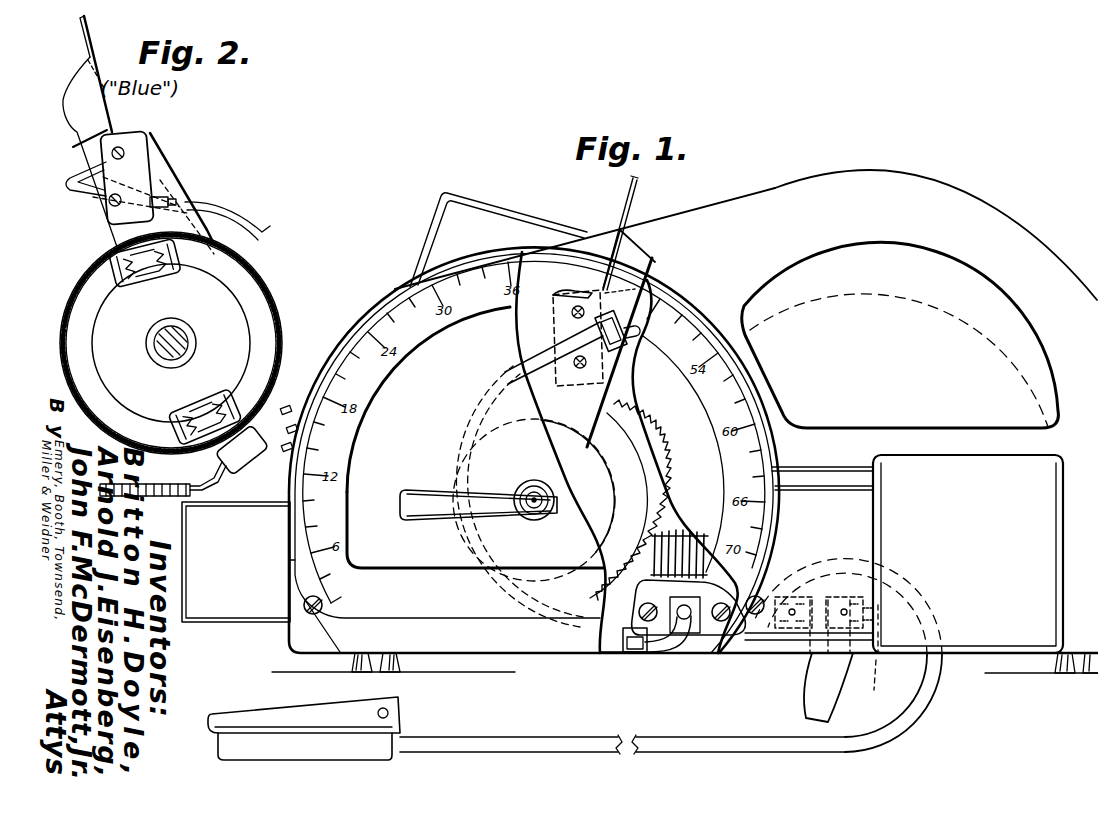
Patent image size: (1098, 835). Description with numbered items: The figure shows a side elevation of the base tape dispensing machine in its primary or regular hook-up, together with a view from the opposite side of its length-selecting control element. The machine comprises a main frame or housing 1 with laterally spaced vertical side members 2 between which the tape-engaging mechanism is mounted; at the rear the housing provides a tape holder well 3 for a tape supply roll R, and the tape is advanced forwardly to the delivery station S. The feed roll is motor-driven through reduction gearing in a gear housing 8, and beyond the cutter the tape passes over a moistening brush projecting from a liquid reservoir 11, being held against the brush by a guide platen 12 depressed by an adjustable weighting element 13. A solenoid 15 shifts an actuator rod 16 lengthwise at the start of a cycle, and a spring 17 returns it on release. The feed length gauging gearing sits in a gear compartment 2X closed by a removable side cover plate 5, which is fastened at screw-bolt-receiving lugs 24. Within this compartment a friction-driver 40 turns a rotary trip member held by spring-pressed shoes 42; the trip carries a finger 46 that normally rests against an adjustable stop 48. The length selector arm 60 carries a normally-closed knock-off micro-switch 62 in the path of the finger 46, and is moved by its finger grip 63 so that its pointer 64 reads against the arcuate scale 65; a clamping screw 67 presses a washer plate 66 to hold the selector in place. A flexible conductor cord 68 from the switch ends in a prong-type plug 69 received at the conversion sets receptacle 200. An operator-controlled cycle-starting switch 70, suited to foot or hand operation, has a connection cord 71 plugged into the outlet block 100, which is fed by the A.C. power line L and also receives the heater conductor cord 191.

In FIG. 1, the main frame or housing 1 is at (1046, 226).
In FIG. 1, the vertical side members 2 is at (745, 199).
In FIG. 1, the gear compartment 2X is at (695, 320).
In FIG. 1, the tape holder well 3 is at (1012, 298).
In FIG. 1, the tape supply roll R is at (920, 306).
In FIG. 1, the side cover plate 5 is at (373, 333).
In FIG. 1, the gear housing 8 is at (624, 331).
In FIG. 1, the liquid reservoir 11 is at (250, 597).
In FIG. 1, the guide platen 12 is at (291, 444).
In FIG. 1, the adjustable weighting element 13 is at (357, 428).
In FIG. 1, the solenoid 15 is at (968, 464).
In FIG. 1, the actuator rod 16 is at (661, 567).
In FIG. 1, the spring 17 is at (682, 540).
In FIG. 1, the screw-bolt-receiving lugs 24 is at (314, 615).
In FIG. 2, the friction-driver flange 40 is at (80, 276).
In FIG. 2, the spring-pressed shoes 42 is at (110, 283).
In FIG. 2, the trip finger 46 is at (274, 405).
In FIG. 2, the adjustable stop 48 is at (216, 468).
In FIG. 1, the delivery station S is at (283, 480).
In FIG. 1, the length selector arm 60 is at (626, 383).
In FIG. 2, the knock-off micro-switch 62 is at (148, 161).
In FIG. 1, the knock-off micro-switch 62 is at (570, 292).
In FIG. 2, the finger grip 63 is at (82, 38).
In FIG. 1, the finger grip 63 is at (640, 185).
In FIG. 1, the length-selecting pointer 64 is at (613, 243).
In FIG. 1, the arcuate scale 65 is at (700, 411).
In FIG. 1, the washer plate 66 is at (608, 497).
In FIG. 1, the clamping screw 67 is at (477, 498).
In FIG. 1, the flexible conductor cord 68 is at (560, 364).
In FIG. 1, the prong-type plug 69 is at (716, 645).
In FIG. 1, the cycle-starting switch 70 is at (275, 713).
In FIG. 1, the connection cord 71 is at (680, 738).
In FIG. 1, the outlet block 100 is at (812, 648).
In FIG. 1, the heater conductor cord 191 is at (836, 693).
In FIG. 1, the A.C. power line L is at (893, 651).
In FIG. 1, the conversion sets receptacle 200 is at (690, 636).